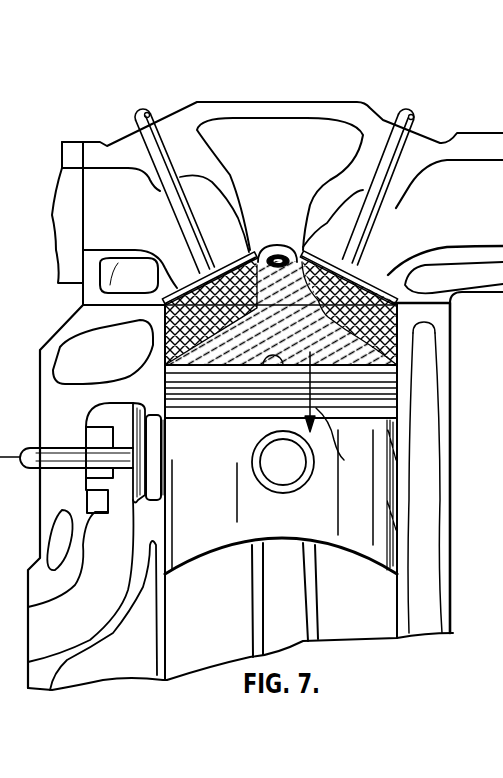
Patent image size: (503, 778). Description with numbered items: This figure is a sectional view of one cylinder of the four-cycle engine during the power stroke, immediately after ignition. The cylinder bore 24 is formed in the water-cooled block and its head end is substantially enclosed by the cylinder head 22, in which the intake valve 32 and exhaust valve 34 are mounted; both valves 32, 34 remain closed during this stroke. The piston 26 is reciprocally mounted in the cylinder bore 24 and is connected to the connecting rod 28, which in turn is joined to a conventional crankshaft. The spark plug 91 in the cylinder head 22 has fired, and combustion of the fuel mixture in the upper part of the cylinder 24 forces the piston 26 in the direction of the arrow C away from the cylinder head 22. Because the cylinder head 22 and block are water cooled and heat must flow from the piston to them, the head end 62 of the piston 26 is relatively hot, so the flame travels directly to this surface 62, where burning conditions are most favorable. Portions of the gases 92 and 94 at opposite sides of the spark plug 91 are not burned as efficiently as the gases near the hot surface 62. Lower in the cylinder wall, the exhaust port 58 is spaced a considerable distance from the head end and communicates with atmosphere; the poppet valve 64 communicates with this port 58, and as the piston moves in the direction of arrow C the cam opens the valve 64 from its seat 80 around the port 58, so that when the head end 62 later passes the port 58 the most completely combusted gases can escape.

The cylinder head 22 is at (472, 297).
The cylinder bore 24 is at (167, 588).
The piston 26 is at (202, 488).
The connecting rod 28 is at (258, 597).
The intake valve 32 is at (183, 268).
The exhaust valve 34 is at (374, 290).
The exhaust port 58 is at (166, 434).
The head end of the piston 62 is at (268, 360).
The poppet valve 64 is at (130, 486).
The valve seat 80 is at (172, 506).
The spark plug 91 is at (277, 250).
The gaseous portion 92 is at (156, 282).
The gaseous portion 94 is at (415, 260).
The arrow C is at (331, 413).